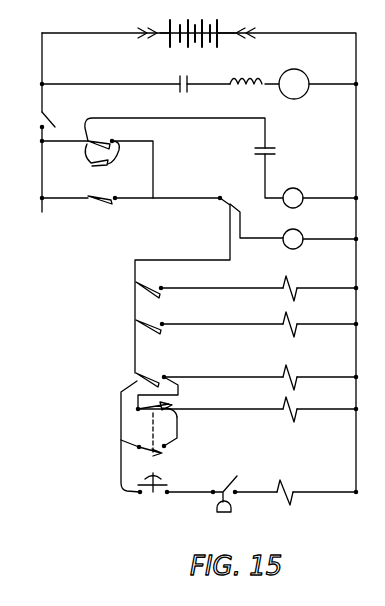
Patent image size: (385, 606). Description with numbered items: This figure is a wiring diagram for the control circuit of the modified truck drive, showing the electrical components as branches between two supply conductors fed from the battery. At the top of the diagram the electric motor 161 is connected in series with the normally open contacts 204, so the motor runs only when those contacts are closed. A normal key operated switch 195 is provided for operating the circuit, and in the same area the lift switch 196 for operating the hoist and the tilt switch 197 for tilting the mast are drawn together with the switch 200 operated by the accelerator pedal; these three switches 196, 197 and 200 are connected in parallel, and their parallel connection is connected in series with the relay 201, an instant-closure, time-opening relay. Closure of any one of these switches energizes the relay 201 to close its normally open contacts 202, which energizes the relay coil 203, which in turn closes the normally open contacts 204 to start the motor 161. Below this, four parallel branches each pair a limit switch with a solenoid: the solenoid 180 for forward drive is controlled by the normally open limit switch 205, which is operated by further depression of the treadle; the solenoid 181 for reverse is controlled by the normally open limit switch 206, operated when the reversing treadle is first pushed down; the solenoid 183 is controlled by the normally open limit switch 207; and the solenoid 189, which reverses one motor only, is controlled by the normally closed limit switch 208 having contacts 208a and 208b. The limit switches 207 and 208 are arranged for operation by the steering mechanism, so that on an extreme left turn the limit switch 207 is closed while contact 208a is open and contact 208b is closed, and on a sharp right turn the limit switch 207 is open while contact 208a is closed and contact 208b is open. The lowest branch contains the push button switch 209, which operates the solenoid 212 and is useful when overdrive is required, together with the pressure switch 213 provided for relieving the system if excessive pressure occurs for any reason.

The electric motor 161 is at (303, 78).
The solenoid 180 is at (290, 280).
The solenoid 181 is at (290, 317).
The solenoid 183 is at (290, 370).
The solenoid 189 is at (290, 402).
The key operated switch 195 is at (60, 102).
The lift switch 196 is at (105, 146).
The tilt switch 197 is at (103, 167).
The switch 200 is at (101, 208).
The relay 201 is at (304, 236).
The normally open contacts 202 is at (270, 148).
The relay coil 203 is at (286, 192).
The normally open contacts 204 is at (176, 83).
The normally open limit switch 205 is at (153, 289).
The normally open limit switch 206 is at (153, 324).
The normally open limit switch 207 is at (145, 378).
The normally closed limit switch 208 is at (153, 422).
The contact 208a is at (178, 421).
The contact 208b is at (168, 458).
The push button switch 209 is at (153, 495).
The solenoid 212 is at (283, 505).
The pressure switch 213 is at (231, 484).